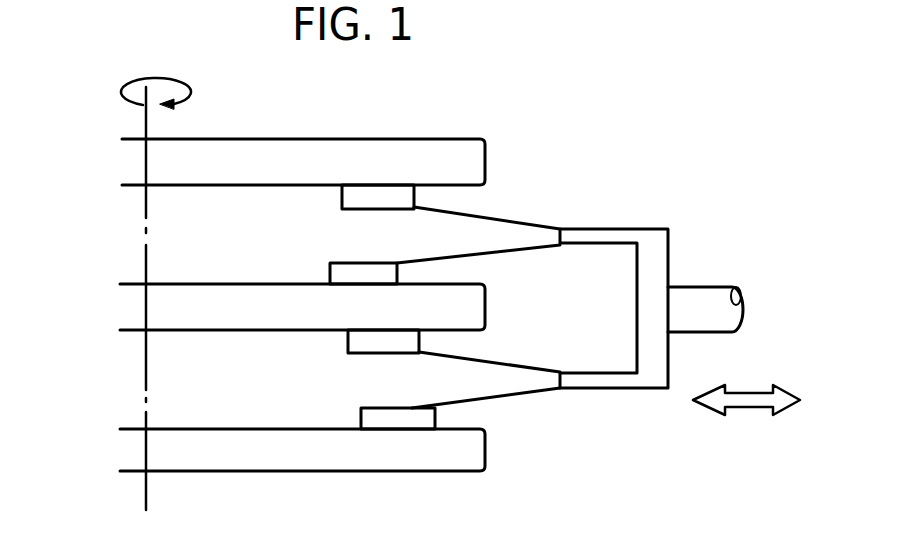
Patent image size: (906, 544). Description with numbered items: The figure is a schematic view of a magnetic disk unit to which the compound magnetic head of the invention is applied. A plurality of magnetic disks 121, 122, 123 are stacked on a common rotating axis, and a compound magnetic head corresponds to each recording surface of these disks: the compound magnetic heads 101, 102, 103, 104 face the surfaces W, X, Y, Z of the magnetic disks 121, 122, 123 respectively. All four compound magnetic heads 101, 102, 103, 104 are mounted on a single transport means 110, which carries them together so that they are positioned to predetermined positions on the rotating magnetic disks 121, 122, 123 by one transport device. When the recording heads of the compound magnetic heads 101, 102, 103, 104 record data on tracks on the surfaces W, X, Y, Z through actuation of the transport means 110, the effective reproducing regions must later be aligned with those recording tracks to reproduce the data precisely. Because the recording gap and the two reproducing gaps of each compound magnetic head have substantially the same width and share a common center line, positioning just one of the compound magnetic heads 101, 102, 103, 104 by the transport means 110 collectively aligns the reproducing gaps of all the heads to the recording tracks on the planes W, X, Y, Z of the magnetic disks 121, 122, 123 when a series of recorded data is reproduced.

The compound magnetic head 101 is at (415, 194).
The compound magnetic head 102 is at (397, 270).
The compound magnetic head 103 is at (419, 338).
The compound magnetic head 104 is at (435, 415).
The transport means 110 is at (657, 267).
The magnetic disk 121 is at (122, 167).
The magnetic disk 122 is at (123, 312).
The magnetic disk 123 is at (123, 458).
The surface of magnetic disk W is at (224, 186).
The surface of magnetic disk X is at (217, 283).
The surface of magnetic disk Y is at (217, 331).
The surface of magnetic disk Z is at (220, 429).